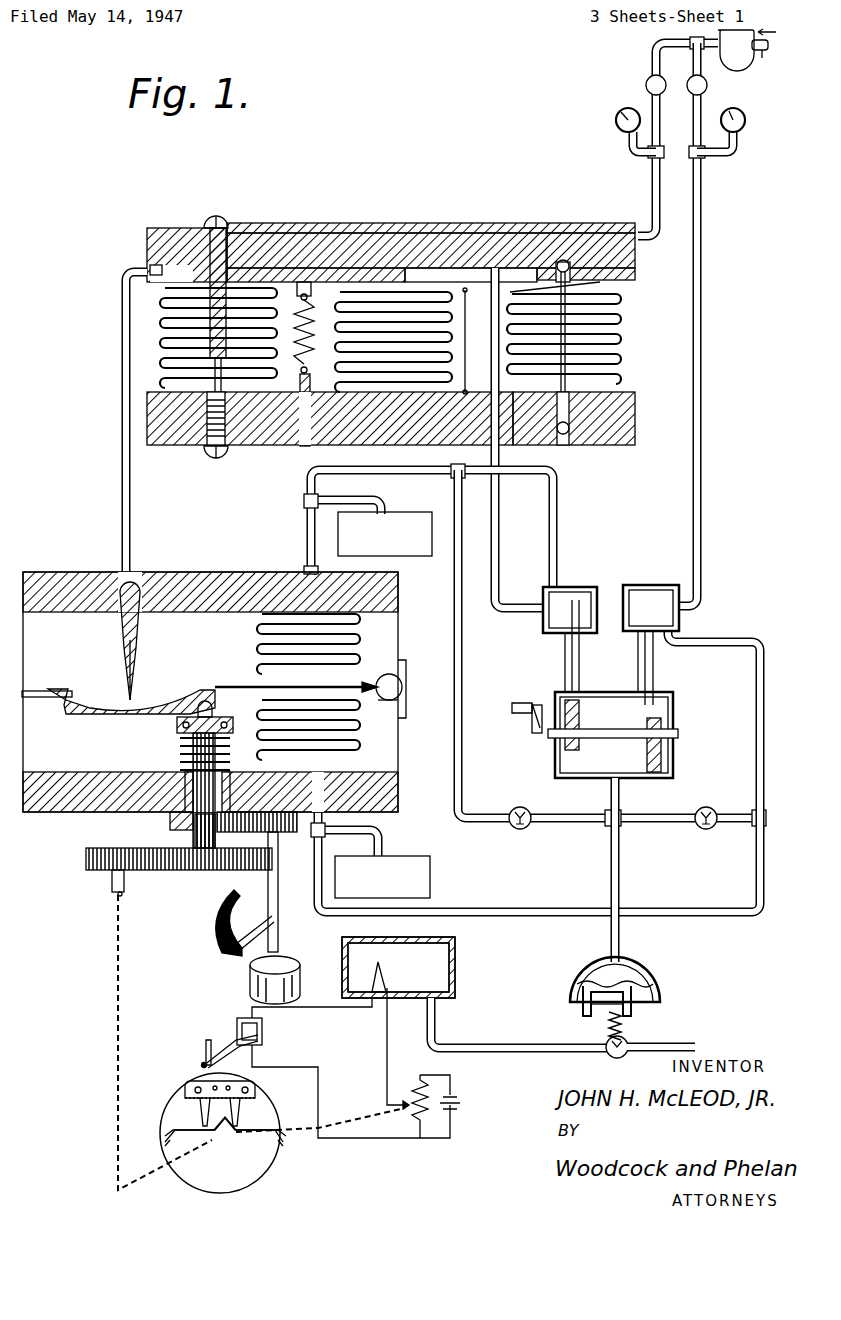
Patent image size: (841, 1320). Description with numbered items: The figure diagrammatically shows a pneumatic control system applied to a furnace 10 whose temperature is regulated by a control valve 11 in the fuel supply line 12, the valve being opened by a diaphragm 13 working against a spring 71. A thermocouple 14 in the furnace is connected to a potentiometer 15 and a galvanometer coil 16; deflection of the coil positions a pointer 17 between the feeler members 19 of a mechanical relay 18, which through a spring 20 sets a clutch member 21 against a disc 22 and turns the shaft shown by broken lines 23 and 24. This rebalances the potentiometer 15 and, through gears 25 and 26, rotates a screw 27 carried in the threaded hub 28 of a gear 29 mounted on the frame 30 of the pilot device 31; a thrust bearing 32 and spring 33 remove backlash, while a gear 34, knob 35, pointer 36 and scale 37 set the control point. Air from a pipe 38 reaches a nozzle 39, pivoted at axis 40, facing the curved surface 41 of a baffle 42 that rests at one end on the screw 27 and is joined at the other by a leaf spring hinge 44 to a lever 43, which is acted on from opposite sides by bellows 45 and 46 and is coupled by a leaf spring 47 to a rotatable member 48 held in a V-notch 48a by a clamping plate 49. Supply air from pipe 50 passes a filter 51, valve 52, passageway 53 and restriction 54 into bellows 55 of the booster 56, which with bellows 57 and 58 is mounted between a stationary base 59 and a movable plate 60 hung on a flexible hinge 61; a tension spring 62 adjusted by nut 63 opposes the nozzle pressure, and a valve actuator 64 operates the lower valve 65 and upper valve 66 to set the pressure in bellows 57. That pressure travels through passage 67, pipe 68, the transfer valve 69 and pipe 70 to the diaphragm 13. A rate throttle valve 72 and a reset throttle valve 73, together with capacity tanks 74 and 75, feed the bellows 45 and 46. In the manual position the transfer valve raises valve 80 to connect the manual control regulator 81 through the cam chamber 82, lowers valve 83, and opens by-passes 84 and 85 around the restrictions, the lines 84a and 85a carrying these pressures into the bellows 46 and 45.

The furnace 10 is at (398, 967).
The control valve 11 is at (606, 1050).
The fuel supply line 12 is at (675, 1045).
The diaphragm 13 is at (622, 998).
The thermocouple 14 is at (377, 985).
The potentiometer 15 is at (436, 1128).
The galvanometer coil 16 is at (262, 1036).
The pointer 17 is at (202, 1064).
The mechanical relay 18 is at (195, 1088).
The feeler members 19 is at (220, 1050).
The spring 20 is at (232, 1106).
The clutch member 21 is at (230, 1136).
The disc 22 is at (266, 1160).
The broken line shaft indication 23 is at (340, 1124).
The broken line shaft indication 24 is at (116, 1150).
The gear 25 is at (90, 860).
The gear 26 is at (190, 868).
The screw 27 is at (216, 836).
The internally threaded hub 28 is at (185, 772).
The gear 29 is at (182, 824).
The frame 30 is at (42, 812).
The pilot device 31 is at (232, 692).
The thrust bearing 32 is at (218, 722).
The spring 33 is at (228, 750).
The gear 34 is at (280, 832).
The knob 35 is at (250, 984).
The pointer 36 is at (250, 932).
The scale 37 is at (216, 930).
The pipe 38 is at (124, 515).
The nozzle 39 is at (133, 690).
The pivotal axis 40 is at (122, 592).
The curved surface 41 is at (190, 690).
The baffle 42 is at (66, 712).
The lever 43 is at (238, 686).
The leaf spring hinge 44 is at (42, 690).
The bellows 45 is at (340, 650).
The bellows 46 is at (345, 736).
The leaf spring 47 is at (368, 682).
The rotatable member 48 is at (398, 680).
The V-notch 48a is at (400, 700).
The clamping plate 49 is at (404, 660).
The supply pipe 50 is at (765, 40).
The filter 51 is at (732, 60).
The valve 52 is at (646, 85).
The passageway 53 is at (440, 230).
The restriction 54 is at (210, 345).
The bellows 55 is at (168, 372).
The pneumatic relay or booster 56 is at (400, 326).
The bellows 57 is at (612, 303).
The bellows 58 is at (324, 308).
The stationary base 59 is at (163, 232).
The movable plate 60 is at (270, 446).
The flexible hinge 61 is at (466, 322).
The tension spring 62 is at (300, 368).
The nut 63 is at (300, 445).
The valve actuator 64 is at (570, 405).
The lower valve 65 is at (565, 436).
The upper valve 66 is at (563, 258).
The passage 67 is at (515, 266).
The pipe 68 is at (492, 352).
The transfer valve 69 is at (611, 686).
The pipe 70 is at (619, 888).
The spring 71 is at (622, 1026).
The throttle valve 72 is at (514, 810).
The throttle valve 73 is at (706, 808).
The capacity tank 74 is at (412, 866).
The capacity tank 75 is at (400, 518).
The valve 80 is at (646, 628).
The manual control regulator 81 is at (690, 92).
The operating cam chamber 82 is at (585, 770).
The valve 83 is at (570, 596).
The by-pass 84 is at (758, 705).
The pipe 84a is at (324, 830).
The by-pass connection 85 is at (550, 515).
The pipe 85a is at (308, 545).